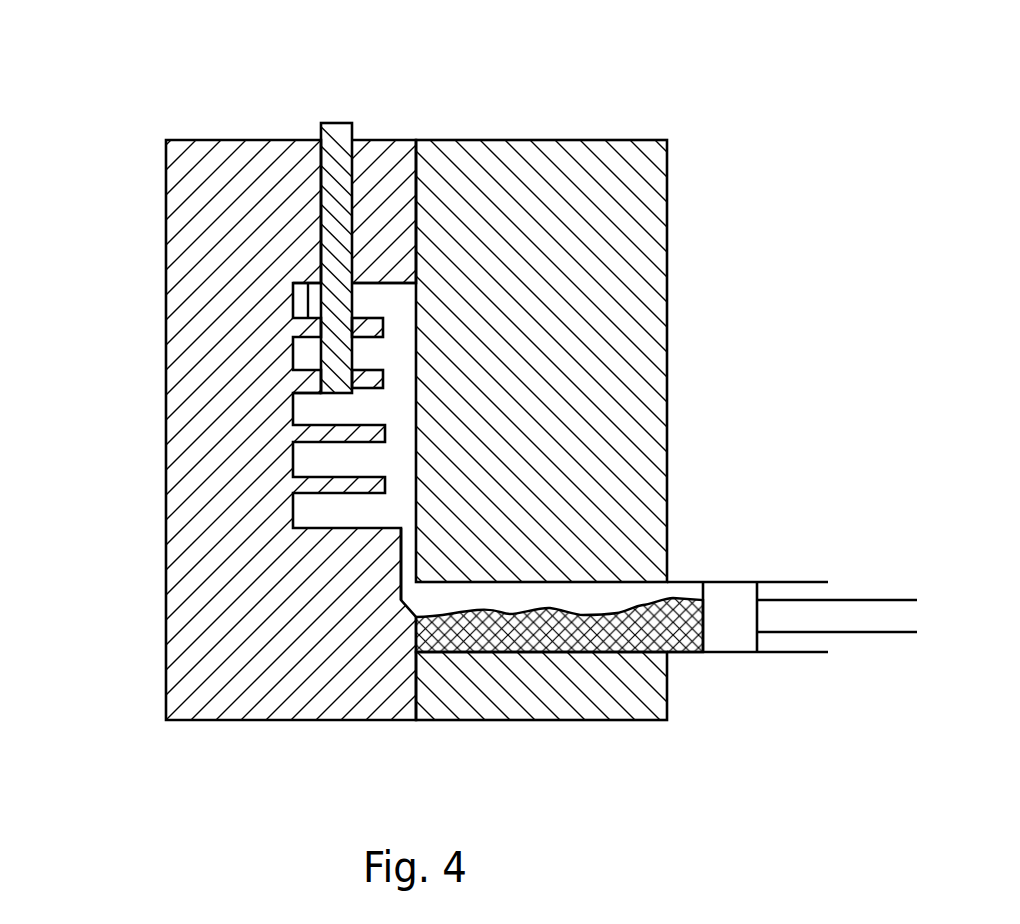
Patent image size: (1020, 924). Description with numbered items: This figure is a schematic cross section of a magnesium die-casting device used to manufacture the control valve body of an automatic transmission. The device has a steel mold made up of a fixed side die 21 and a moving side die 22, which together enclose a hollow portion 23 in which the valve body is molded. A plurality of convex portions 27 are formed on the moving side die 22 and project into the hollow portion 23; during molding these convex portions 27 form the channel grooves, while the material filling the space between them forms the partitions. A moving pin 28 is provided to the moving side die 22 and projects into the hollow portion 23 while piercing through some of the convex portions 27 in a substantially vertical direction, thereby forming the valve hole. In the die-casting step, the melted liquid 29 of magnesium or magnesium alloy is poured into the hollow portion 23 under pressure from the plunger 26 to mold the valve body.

The fixed side die 21 is at (647, 230).
The moving side die 22 is at (183, 270).
The hollow portion 23 is at (401, 297).
The plunger 26 is at (732, 643).
The convex portion 27 is at (308, 283).
The moving pin 28 is at (337, 150).
The melted liquid 29 is at (682, 653).